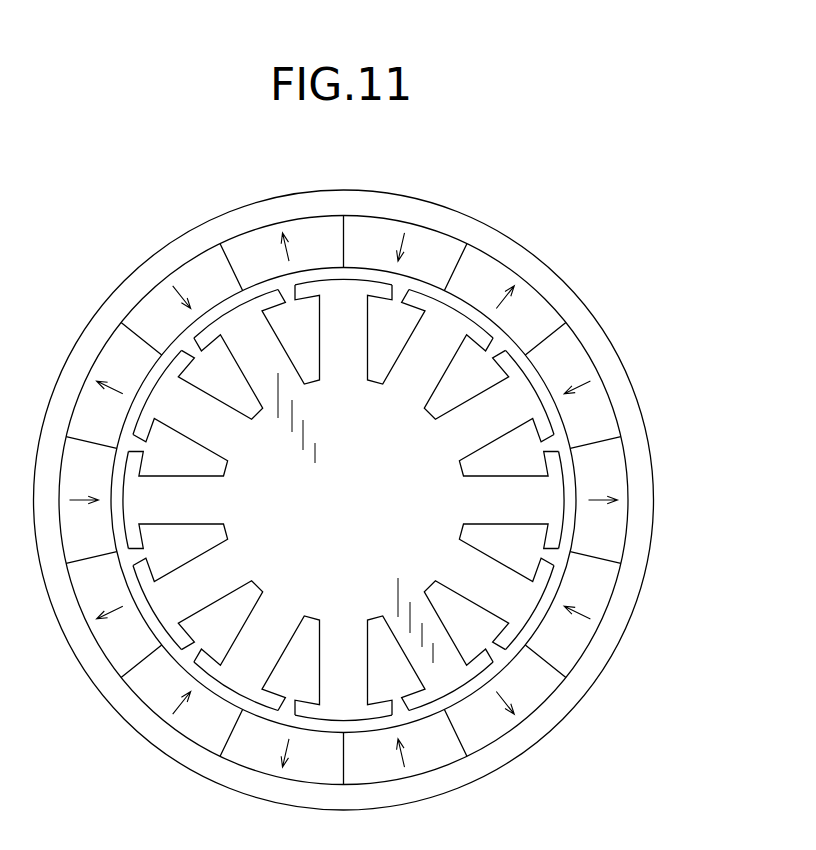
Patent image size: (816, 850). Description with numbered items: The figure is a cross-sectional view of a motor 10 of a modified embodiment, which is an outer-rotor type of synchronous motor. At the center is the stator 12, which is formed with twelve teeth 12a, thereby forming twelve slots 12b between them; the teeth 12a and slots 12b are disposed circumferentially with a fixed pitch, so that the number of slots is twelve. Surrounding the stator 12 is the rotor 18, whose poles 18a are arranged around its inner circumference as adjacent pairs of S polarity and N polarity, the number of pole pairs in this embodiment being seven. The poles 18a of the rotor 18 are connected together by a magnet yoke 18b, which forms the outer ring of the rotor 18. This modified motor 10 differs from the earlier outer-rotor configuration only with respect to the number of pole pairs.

The motor 10 is at (647, 150).
The stator 12 is at (563, 473).
The tooth 12a is at (545, 508).
The slot 12b is at (540, 552).
The rotor 18 is at (237, 207).
The pole 18a is at (375, 235).
The magnet yoke 18b is at (310, 207).